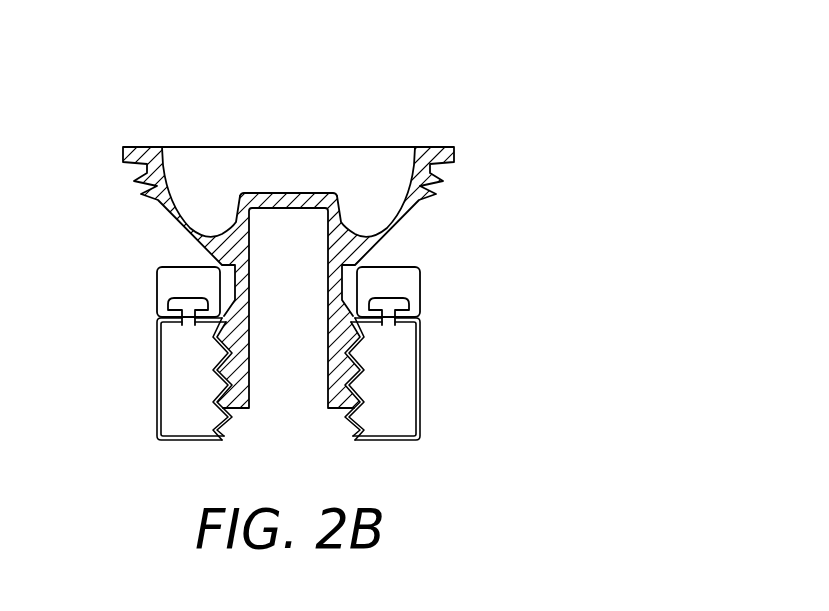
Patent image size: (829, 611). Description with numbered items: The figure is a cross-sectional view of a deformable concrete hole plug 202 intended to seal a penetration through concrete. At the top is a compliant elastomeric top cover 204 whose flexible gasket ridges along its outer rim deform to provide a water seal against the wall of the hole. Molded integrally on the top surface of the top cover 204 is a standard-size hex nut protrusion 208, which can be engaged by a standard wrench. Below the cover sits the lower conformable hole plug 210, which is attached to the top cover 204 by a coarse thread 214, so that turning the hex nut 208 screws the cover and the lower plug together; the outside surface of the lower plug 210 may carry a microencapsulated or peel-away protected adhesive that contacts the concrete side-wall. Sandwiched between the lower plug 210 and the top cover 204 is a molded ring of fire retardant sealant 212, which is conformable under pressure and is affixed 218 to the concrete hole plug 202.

The deformable concrete hole plug 202 is at (605, 91).
The elastomeric top cover 204 is at (447, 160).
The hex nut protrusion 208 is at (240, 195).
The lower conformable hole plug 210 is at (405, 374).
The molded ring of fire retardant sealant 212 is at (160, 292).
The coarse thread 214 is at (218, 356).
The affixing of the sealant ring 218 is at (400, 301).